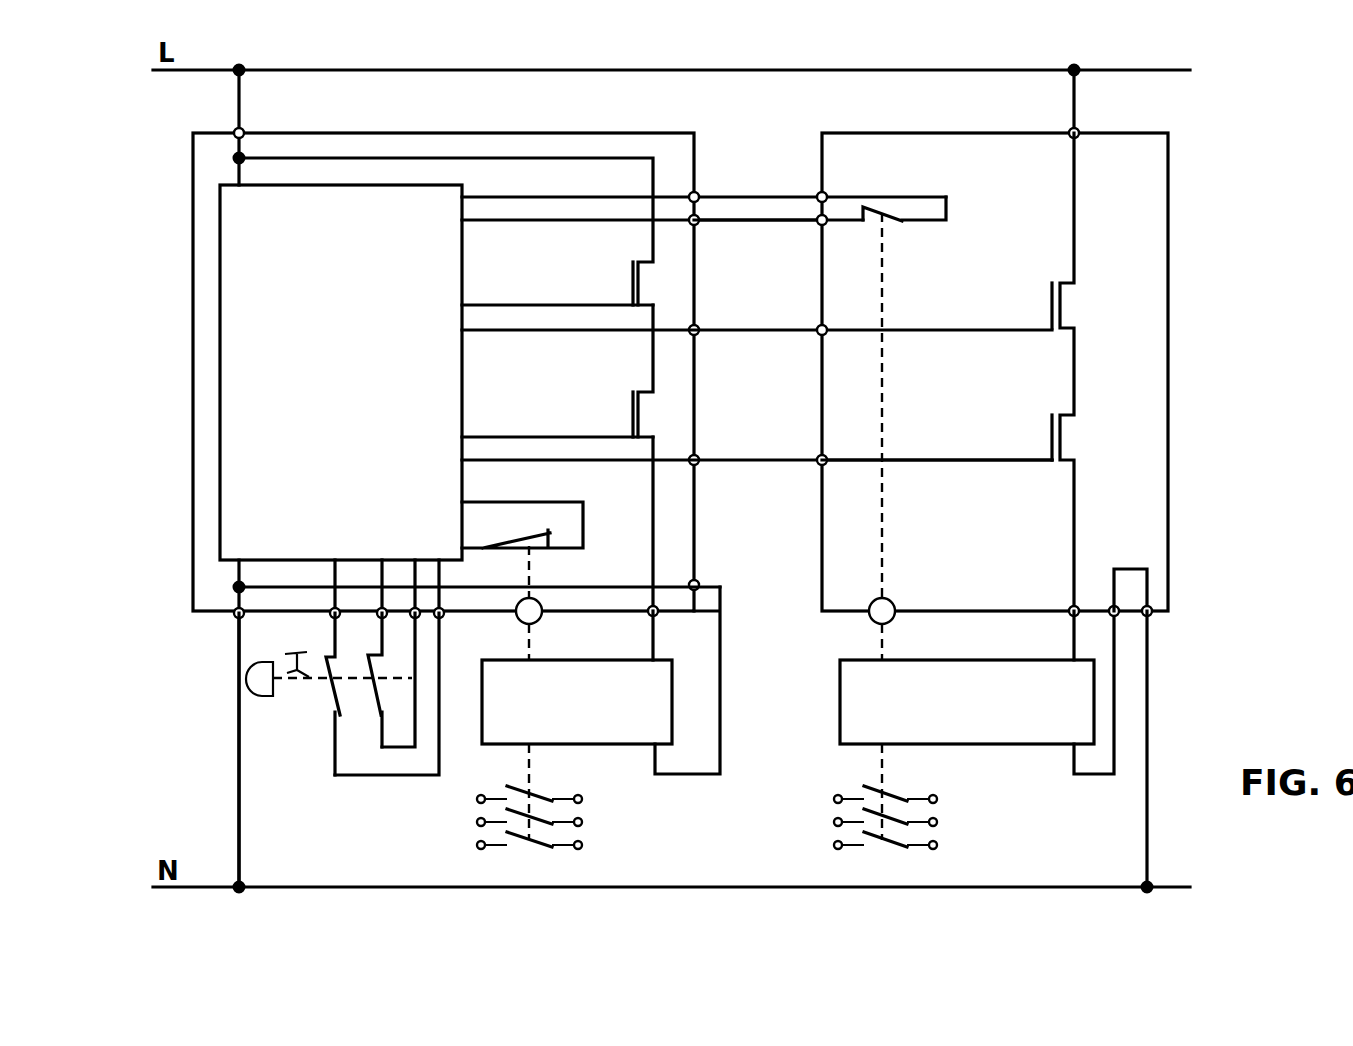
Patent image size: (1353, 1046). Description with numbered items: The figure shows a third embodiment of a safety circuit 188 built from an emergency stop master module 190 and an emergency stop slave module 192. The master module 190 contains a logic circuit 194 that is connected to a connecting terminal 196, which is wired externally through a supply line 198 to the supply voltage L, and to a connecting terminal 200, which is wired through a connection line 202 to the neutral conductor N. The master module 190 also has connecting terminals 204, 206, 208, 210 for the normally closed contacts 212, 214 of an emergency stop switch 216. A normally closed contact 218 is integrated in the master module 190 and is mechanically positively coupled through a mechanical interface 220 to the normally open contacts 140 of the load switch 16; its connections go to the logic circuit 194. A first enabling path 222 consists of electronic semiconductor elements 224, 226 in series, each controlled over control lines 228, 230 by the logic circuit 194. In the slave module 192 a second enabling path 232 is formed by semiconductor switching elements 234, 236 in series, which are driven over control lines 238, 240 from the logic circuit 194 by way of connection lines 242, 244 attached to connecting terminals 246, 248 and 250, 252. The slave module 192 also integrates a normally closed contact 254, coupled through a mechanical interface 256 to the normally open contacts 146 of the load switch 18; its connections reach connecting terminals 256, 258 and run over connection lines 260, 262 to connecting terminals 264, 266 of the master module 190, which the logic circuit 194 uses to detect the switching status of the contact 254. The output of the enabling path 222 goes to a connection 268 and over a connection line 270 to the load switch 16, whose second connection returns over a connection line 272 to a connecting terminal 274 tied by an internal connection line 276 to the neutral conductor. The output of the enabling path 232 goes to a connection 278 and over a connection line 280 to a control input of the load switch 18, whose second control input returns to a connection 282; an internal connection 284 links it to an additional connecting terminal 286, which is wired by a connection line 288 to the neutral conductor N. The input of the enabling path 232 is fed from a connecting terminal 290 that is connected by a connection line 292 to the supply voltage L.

The safety circuit 188 is at (651, 52).
The emergency stop master module 190 is at (552, 148).
The emergency stop slave module 192 is at (960, 170).
The logic circuit 194 is at (315, 372).
The connecting terminal 196 is at (243, 130).
The supply line 198 is at (237, 98).
The connecting terminal 200 is at (236, 617).
The connection line 202 is at (237, 783).
The connecting terminal 204 is at (331, 610).
The connecting terminal 206 is at (378, 610).
The connecting terminal 208 is at (412, 610).
The connecting terminal 210 is at (443, 617).
The normally closed contact 212 is at (333, 697).
The normally closed contact 214 is at (378, 697).
The emergency stop switch 216 is at (317, 829).
The normally closed contact 218 is at (535, 530).
The mechanical interface 220 is at (535, 625).
The first enabling path 222 is at (657, 177).
The electronic semiconductor element 224 is at (630, 285).
The electronic semiconductor element 226 is at (630, 397).
The control line 228 is at (506, 304).
The control line 230 is at (506, 434).
The second enabling path 232 is at (1068, 165).
The semiconductor switching element 234 is at (1050, 307).
The semiconductor switching element 236 is at (1048, 437).
The control line 238 is at (935, 334).
The control line 240 is at (942, 464).
The connection line 242 is at (775, 334).
The connection line 244 is at (788, 464).
The connecting terminal 246 is at (826, 334).
The connecting terminal 248 is at (698, 334).
The connecting terminal 250 is at (826, 464).
The connecting terminal 252 is at (698, 464).
The normally closed contact 254 is at (887, 219).
The mechanical interface 256 is at (825, 192).
The connecting terminal 258 is at (826, 224).
The connection line 260 is at (787, 192).
The connection line 262 is at (775, 224).
The connecting terminal 264 is at (698, 194).
The connecting terminal 266 is at (698, 224).
The connection 268 is at (658, 614).
The connection line 270 is at (656, 643).
The connection line 272 is at (723, 713).
The connecting terminal 274 is at (698, 582).
The internal connection line 276 is at (617, 583).
The connection 278 is at (1070, 607).
The connection line 280 is at (1074, 629).
The connection 282 is at (1114, 606).
The internal connection 284 is at (1133, 567).
The connecting terminal 286 is at (1151, 615).
The connection line 288 is at (1147, 822).
The connecting terminal 290 is at (1078, 137).
The connection line 292 is at (1076, 98).
The load switch 16 is at (563, 714).
The load switch 18 is at (949, 714).
The normally open contacts 140 is at (522, 845).
The normally open contacts 146 is at (876, 849).